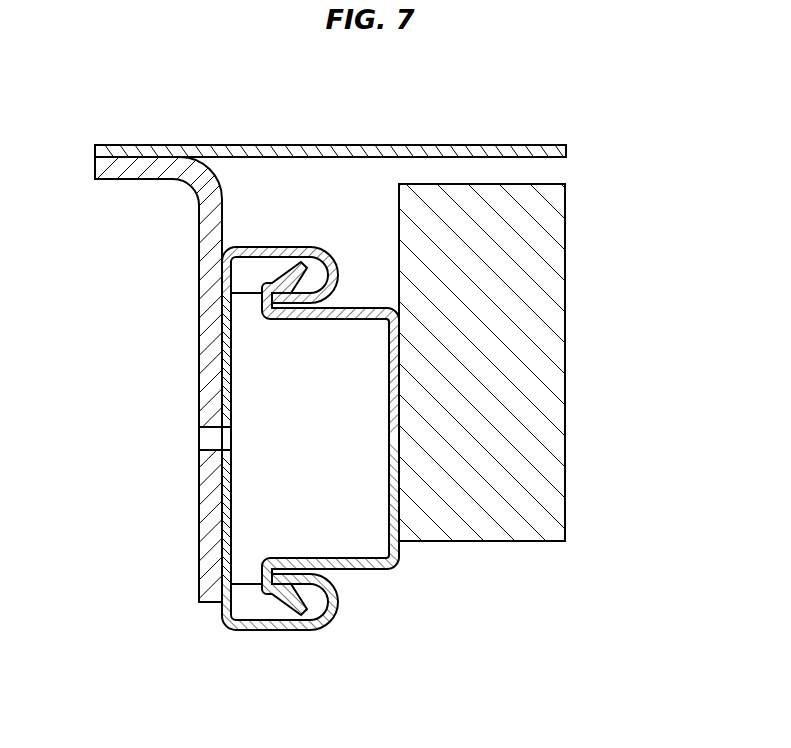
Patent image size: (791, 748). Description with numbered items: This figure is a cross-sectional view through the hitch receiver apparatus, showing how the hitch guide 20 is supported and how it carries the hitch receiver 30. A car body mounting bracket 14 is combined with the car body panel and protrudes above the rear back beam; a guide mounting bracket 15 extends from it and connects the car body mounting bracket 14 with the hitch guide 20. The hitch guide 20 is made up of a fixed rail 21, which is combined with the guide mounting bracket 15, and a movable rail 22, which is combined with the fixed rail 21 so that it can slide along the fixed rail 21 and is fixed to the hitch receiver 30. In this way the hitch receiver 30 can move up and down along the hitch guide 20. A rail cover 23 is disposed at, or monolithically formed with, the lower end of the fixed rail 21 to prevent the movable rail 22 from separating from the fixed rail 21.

The car body mounting bracket 14 is at (456, 150).
The guide mounting bracket 15 is at (212, 378).
The hitch guide 20 is at (308, 399).
The fixed rail 21 is at (293, 248).
The movable rail 22 is at (395, 560).
The rail cover 23 is at (246, 268).
The hitch receiver 30 is at (542, 345).